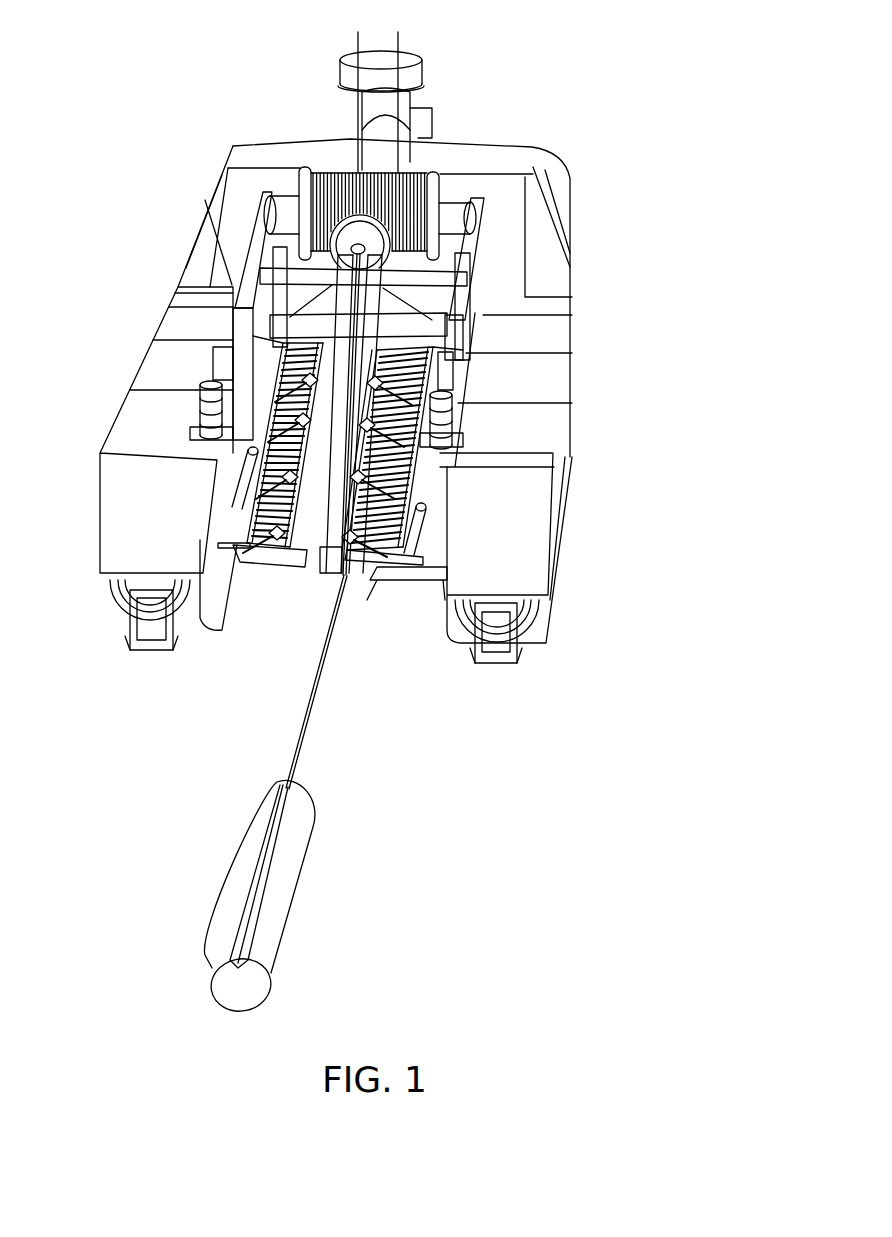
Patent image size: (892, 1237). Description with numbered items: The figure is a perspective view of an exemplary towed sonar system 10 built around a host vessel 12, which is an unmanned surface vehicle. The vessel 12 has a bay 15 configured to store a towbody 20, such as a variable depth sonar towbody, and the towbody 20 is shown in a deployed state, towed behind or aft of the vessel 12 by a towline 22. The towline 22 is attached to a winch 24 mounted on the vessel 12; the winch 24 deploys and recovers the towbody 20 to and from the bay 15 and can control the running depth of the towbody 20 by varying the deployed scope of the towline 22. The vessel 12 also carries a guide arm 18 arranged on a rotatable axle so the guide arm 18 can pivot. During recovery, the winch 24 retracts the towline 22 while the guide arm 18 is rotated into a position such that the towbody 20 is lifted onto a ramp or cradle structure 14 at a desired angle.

The system 10 is at (579, 93).
The host vessel 12 is at (563, 307).
The ramp or cradle structure 14 is at (367, 572).
The bay 15 is at (258, 610).
The guide arm 18 is at (377, 303).
The towbody 20 is at (293, 882).
The towline 22 is at (318, 687).
The winch 24 is at (300, 205).